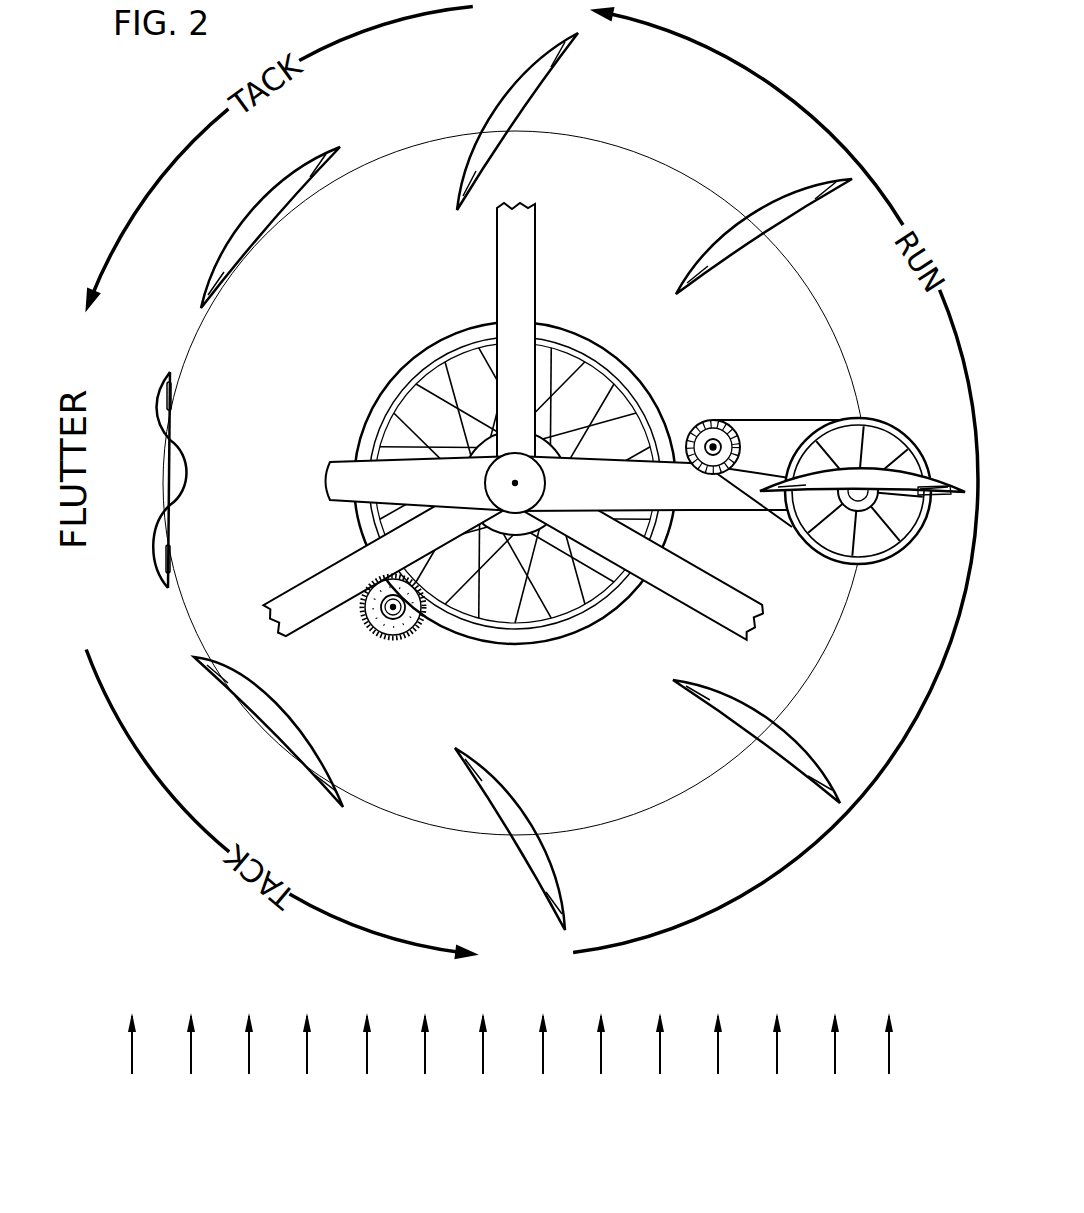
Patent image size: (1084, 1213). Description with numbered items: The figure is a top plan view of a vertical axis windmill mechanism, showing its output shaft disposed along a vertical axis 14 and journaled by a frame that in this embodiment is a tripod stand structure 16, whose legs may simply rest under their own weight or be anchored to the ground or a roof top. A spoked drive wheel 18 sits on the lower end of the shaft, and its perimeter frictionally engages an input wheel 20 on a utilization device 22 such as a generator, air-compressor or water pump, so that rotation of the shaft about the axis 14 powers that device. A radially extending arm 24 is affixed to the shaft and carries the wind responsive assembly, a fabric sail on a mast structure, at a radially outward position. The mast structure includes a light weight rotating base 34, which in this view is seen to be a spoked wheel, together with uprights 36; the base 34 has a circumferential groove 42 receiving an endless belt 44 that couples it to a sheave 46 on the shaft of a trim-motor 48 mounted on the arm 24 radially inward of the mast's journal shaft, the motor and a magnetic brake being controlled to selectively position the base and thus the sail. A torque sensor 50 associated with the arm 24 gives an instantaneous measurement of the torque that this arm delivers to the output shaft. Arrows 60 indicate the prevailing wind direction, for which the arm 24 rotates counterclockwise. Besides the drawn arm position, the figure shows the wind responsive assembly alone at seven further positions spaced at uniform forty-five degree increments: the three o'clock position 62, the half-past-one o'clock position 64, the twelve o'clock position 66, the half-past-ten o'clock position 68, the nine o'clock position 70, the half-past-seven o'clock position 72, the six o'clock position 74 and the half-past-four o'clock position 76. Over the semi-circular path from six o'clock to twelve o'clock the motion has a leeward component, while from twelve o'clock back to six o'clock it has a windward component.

The vertical axis 14 is at (512, 483).
The tripod stand structure 16 is at (700, 600).
The spoked drive wheel 18 is at (583, 622).
The input wheel 20 is at (402, 612).
The utilization device 22 is at (384, 617).
The radially extending arm 24 is at (700, 494).
The rotating base 34 is at (888, 453).
The uprights 36 is at (938, 500).
The circumferential groove 42 is at (860, 468).
The endless belt 44 is at (768, 423).
The sheave 46 is at (716, 436).
The trim-motor 48 is at (706, 432).
The torque sensor 50 is at (582, 512).
The arrows indicating wind direction 60 is at (778, 1035).
The three o'clock position of the wind responsive assembly 62 is at (908, 458).
The 1:30 o'clock position of the wind responsive assembly 64 is at (762, 210).
The twelve o'clock position of the wind responsive assembly 66 is at (515, 92).
The 10:30 o'clock position of the wind responsive assembly 68 is at (256, 207).
The nine o'clock position of the wind responsive assembly 70 is at (158, 405).
The 7:30 o'clock position of the wind responsive assembly 72 is at (208, 652).
The six o'clock position of the wind responsive assembly 74 is at (553, 877).
The 4:30 o'clock position of the wind responsive assembly 76 is at (794, 740).